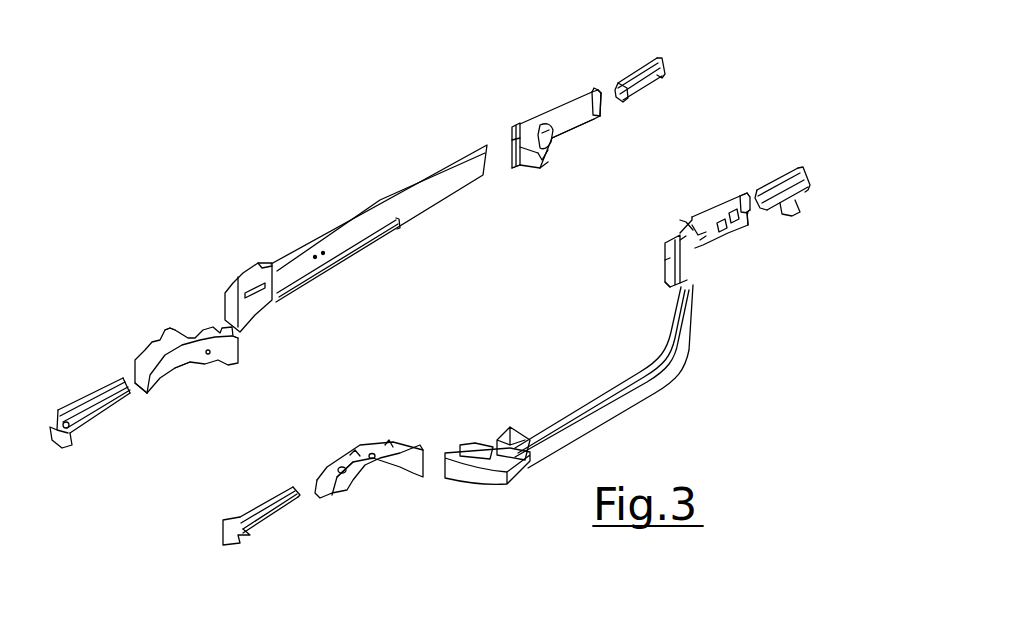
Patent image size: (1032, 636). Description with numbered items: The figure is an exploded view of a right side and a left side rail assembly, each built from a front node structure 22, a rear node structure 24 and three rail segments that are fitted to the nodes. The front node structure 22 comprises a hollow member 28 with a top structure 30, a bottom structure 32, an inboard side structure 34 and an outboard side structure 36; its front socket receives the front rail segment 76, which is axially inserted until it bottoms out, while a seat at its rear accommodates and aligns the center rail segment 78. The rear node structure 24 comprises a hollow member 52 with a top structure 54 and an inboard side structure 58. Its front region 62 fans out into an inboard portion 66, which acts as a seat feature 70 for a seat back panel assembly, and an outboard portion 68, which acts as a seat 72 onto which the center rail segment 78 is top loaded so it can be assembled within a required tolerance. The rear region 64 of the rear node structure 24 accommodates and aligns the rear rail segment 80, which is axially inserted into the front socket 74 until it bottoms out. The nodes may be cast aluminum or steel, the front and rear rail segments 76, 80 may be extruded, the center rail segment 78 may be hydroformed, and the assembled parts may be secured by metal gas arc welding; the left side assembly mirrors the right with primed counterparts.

The front node structure 22 is at (200, 340).
The rear node structure 24 is at (553, 115).
The hollow member 28 is at (187, 363).
The top structure 30 is at (147, 348).
The bottom structure 32 is at (162, 386).
The inboard side structure 34 is at (227, 357).
The outboard side structure 36 is at (413, 470).
The hollow member 52 is at (556, 136).
The top structure 54 is at (578, 97).
The inboard side structure 58 is at (586, 114).
The front region 62 is at (509, 133).
The rear region 64 is at (606, 108).
The inboard portion 66 is at (548, 138).
The outboard portion 68 is at (510, 160).
The seat feature 70 is at (549, 146).
The seat 72 is at (508, 142).
The front socket 74 is at (603, 108).
The front rail segment 76 is at (77, 403).
The center rail segment 78 is at (308, 248).
The rear rail segment 80 is at (665, 72).